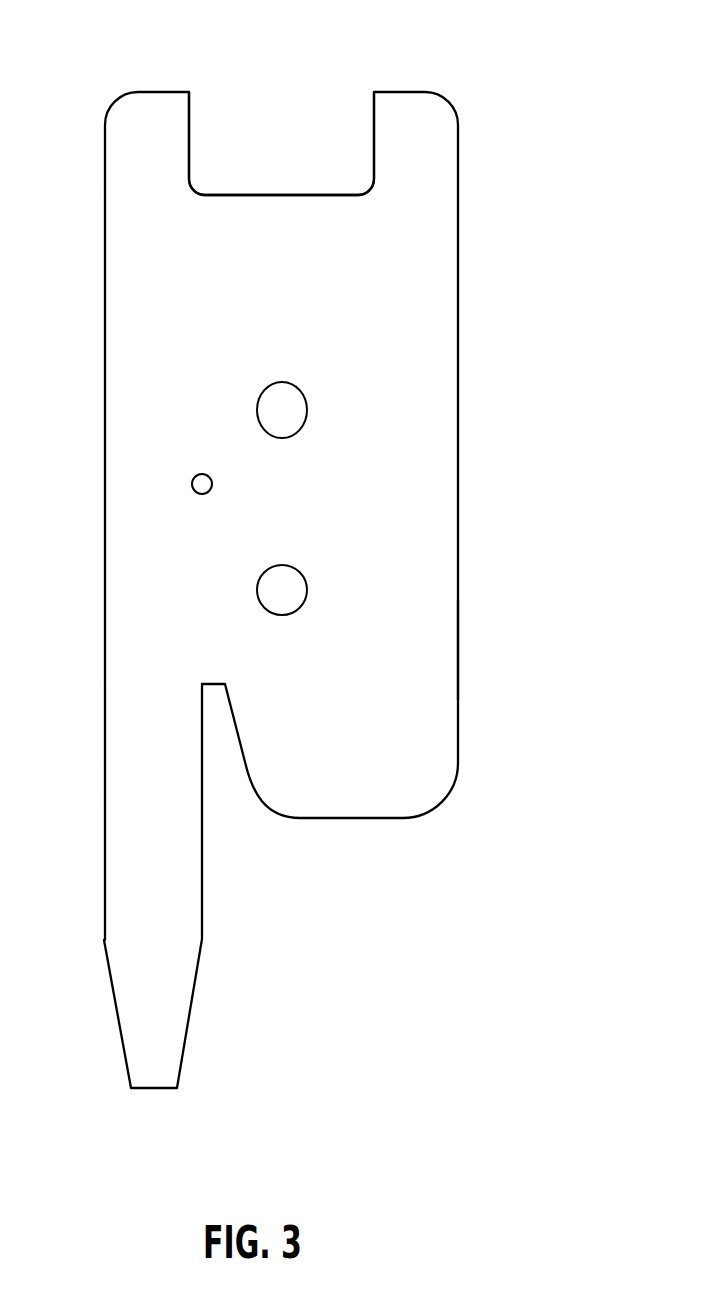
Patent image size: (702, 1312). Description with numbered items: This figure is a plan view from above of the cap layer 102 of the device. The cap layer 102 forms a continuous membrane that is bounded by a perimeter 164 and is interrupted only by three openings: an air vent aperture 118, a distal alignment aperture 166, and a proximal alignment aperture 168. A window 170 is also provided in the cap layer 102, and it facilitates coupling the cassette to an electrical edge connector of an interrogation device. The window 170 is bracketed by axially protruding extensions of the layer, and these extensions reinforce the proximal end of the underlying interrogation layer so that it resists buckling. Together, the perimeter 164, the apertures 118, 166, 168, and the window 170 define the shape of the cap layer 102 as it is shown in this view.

The cap layer 102 is at (448, 393).
The air vent aperture 118 is at (199, 483).
The perimeter 164 is at (462, 636).
The distal alignment aperture 166 is at (282, 577).
The proximal alignment aperture 168 is at (282, 396).
The window 170 is at (216, 151).